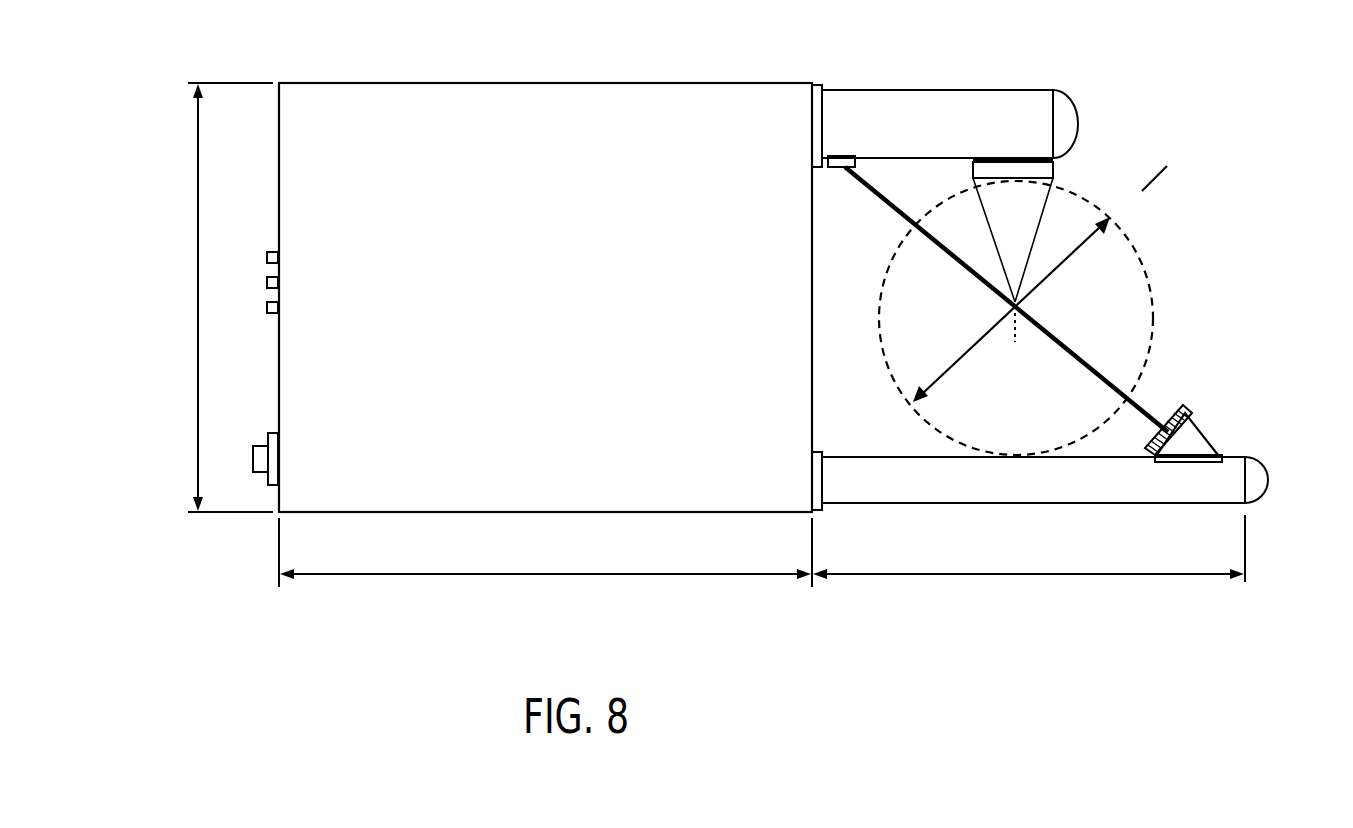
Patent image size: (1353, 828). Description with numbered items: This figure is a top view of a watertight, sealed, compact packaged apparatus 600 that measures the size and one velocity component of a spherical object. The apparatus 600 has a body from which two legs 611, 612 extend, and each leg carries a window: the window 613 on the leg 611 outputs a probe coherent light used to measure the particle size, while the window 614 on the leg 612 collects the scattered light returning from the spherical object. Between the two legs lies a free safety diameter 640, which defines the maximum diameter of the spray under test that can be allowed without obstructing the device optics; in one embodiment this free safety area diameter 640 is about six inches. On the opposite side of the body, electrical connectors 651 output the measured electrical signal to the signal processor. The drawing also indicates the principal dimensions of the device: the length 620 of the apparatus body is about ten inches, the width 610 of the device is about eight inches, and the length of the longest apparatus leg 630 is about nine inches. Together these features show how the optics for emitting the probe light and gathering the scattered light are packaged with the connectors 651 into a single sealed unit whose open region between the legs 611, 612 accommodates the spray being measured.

The compact packaged apparatus 600 is at (188, 586).
The width 610 is at (214, 297).
The leg 611 is at (1268, 490).
The leg 612 is at (1075, 93).
The window 613 is at (1182, 402).
The window 614 is at (1057, 178).
The length of the apparatus body 620 is at (545, 560).
The length of the longest apparatus leg 630 is at (1029, 559).
The free safety diameter 640 is at (1140, 195).
The electrical connectors 651 is at (260, 283).